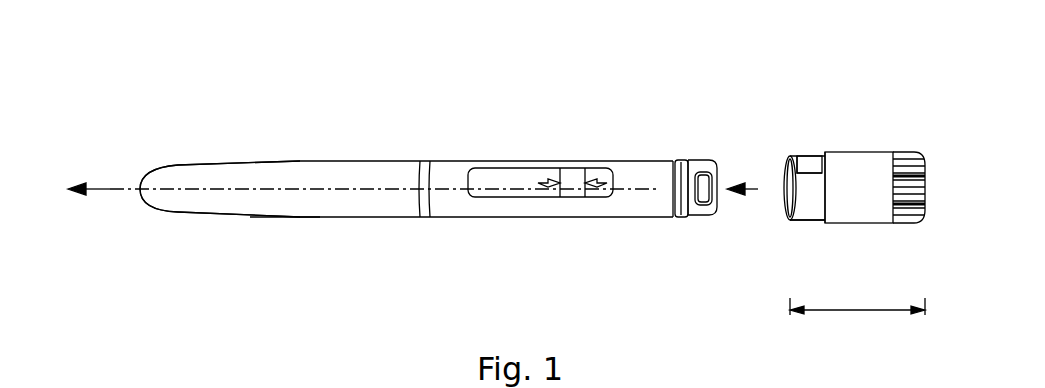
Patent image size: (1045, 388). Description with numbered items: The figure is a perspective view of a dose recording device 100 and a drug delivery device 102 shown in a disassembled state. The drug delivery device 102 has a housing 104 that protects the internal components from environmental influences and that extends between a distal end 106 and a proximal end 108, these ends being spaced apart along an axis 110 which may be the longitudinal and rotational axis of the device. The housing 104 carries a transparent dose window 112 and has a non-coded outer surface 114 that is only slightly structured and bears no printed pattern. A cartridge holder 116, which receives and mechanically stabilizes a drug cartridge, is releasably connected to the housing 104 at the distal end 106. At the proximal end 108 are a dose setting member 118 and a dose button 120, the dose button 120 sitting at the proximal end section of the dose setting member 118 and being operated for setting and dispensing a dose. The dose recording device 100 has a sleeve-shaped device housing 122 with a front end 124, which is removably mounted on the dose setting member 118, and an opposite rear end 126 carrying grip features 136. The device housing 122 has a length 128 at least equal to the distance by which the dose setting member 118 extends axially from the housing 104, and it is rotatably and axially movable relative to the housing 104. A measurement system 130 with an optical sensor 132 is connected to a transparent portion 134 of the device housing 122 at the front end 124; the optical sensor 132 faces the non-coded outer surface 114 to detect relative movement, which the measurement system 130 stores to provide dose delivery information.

The dose recording device 100 is at (926, 95).
The drug delivery device 102 is at (307, 104).
The housing 104 is at (622, 156).
The distal end 106 is at (423, 160).
The proximal end 108 is at (680, 160).
The axis 110 is at (260, 155).
The dose window 112 is at (573, 195).
The non-coded outer surface 114 is at (635, 200).
The cartridge holder 116 is at (287, 200).
The dose setting member 118 is at (683, 212).
The dose button 120 is at (710, 210).
The device housing 122 is at (865, 149).
The front end 124 is at (786, 158).
The rear end 126 is at (930, 160).
The length 128 is at (858, 312).
The measurement system 130 is at (810, 155).
The optical sensor 132 is at (809, 164).
The portion 134 is at (808, 220).
The grip features 136 is at (912, 220).